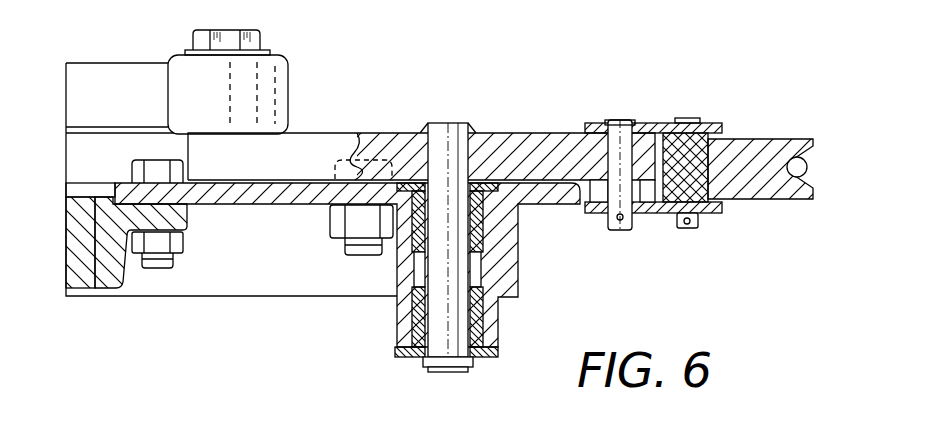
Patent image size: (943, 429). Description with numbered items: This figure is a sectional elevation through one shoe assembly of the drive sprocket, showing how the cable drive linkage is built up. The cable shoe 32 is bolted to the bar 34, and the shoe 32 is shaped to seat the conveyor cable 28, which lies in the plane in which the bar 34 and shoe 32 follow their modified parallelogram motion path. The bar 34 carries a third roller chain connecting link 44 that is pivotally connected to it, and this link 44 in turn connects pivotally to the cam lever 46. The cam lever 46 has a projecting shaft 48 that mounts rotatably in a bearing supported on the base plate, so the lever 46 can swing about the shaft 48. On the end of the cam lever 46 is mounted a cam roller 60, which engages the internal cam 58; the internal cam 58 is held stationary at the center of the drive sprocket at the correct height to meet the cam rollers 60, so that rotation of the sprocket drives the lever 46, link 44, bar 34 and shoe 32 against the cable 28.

The internal cam 58 is at (105, 78).
The cam roller 60 is at (278, 97).
The cam lever 46 is at (317, 150).
The projecting shaft 48 is at (447, 135).
The third roller chain connecting link 44 is at (660, 132).
The bar 34 is at (685, 195).
The cable shoe 32 is at (810, 125).
The conveyor cable 28 is at (807, 160).